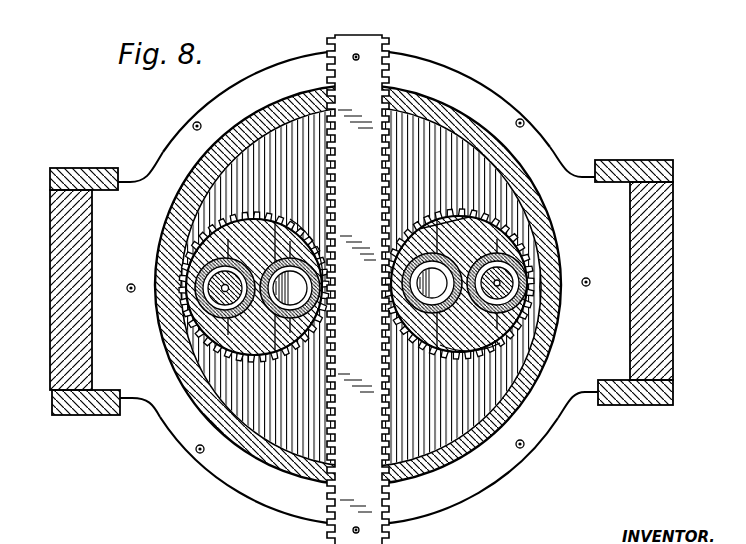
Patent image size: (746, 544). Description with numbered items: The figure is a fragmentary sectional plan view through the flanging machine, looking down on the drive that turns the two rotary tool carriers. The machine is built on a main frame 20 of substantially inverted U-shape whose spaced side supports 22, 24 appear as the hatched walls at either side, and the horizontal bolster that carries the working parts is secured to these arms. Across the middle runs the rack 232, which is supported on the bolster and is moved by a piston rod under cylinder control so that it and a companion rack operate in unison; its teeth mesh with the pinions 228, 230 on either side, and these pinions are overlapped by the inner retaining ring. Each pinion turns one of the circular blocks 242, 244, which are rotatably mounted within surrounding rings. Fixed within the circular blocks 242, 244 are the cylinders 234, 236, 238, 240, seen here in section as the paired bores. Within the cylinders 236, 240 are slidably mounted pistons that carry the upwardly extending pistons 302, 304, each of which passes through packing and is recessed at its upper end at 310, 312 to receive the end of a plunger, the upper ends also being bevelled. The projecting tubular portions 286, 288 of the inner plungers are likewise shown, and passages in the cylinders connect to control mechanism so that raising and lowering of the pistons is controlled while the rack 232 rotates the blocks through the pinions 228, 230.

The main frame 20 is at (66, 416).
The side support 22 is at (640, 406).
The side support 24 is at (98, 416).
The pinion 228 is at (494, 289).
The pinion 230 is at (254, 298).
The rack 232 is at (330, 536).
The cylinder 234 is at (505, 314).
The cylinder 236 is at (424, 350).
The cylinder 238 is at (226, 358).
The cylinder 240 is at (280, 337).
The circular block 242 is at (459, 343).
The circular block 244 is at (300, 356).
The projecting tubular portion 286 is at (534, 257).
The projecting tubular portion 288 is at (166, 268).
The upwardly extending piston 302 is at (535, 256).
The upwardly extending piston 304 is at (238, 288).
The recess 310 is at (440, 286).
The recess 312 is at (318, 352).